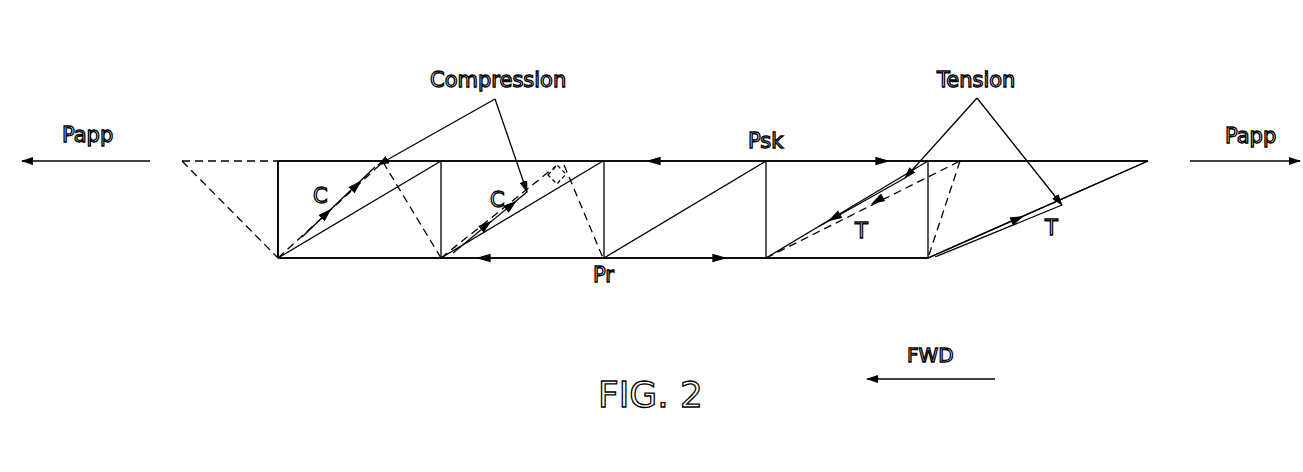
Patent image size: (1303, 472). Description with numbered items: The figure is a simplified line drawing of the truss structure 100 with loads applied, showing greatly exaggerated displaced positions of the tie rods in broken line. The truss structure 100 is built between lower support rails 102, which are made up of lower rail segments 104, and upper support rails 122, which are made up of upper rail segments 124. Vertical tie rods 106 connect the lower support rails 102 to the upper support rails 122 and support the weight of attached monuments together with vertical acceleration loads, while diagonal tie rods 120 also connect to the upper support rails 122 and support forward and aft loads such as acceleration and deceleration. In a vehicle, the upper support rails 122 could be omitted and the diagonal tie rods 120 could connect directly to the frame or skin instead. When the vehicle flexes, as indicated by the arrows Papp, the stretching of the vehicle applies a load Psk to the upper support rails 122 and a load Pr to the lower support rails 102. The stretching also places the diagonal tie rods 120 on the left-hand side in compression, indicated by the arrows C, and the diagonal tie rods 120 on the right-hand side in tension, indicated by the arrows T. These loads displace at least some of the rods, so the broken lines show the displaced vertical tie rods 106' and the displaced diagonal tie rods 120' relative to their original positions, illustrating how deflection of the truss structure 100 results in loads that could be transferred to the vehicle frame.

The truss structure 100 is at (840, 267).
The lower support rails 102 is at (330, 273).
The lower rail segments 104 is at (352, 262).
The vertical tie rods 106 is at (590, 242).
The displaced vertical tie rods 106' is at (582, 212).
The diagonal tie rods 120 is at (713, 169).
The displaced diagonal tie rods 120' is at (713, 203).
The upper support rails 122 is at (368, 130).
The upper rail segments 124 is at (322, 160).